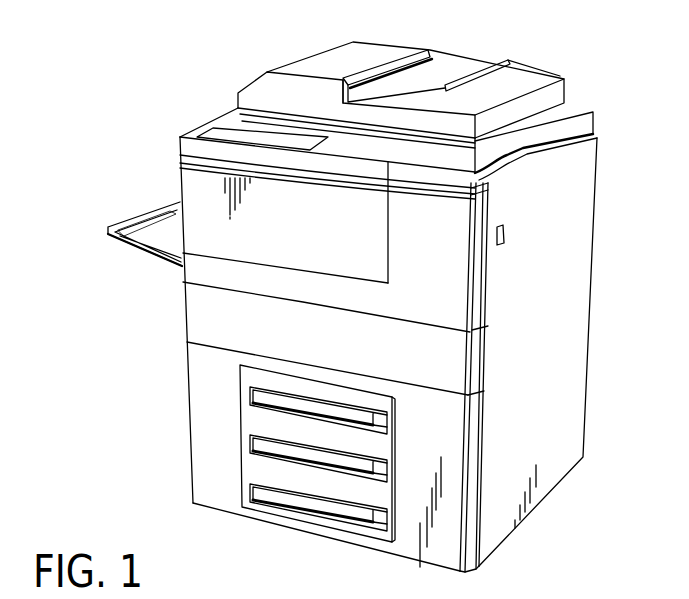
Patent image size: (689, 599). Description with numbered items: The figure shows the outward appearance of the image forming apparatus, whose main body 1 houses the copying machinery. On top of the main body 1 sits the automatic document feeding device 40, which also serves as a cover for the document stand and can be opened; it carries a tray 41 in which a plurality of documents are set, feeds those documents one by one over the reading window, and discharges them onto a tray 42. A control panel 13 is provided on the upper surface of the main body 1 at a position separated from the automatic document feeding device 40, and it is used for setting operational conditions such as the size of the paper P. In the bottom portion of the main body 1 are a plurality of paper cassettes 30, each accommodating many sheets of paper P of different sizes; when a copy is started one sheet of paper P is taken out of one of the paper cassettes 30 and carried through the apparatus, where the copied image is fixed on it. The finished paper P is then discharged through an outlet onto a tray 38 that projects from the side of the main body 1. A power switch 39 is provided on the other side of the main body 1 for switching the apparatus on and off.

The main body 1 is at (598, 168).
The control panel 13 is at (215, 133).
The paper cassettes 30 is at (242, 393).
The tray 38 is at (162, 265).
The power switch 39 is at (507, 230).
The automatic document feeding device 40 is at (403, 50).
The tray 41 is at (480, 62).
The tray 42 is at (528, 80).
The paper P is at (152, 230).